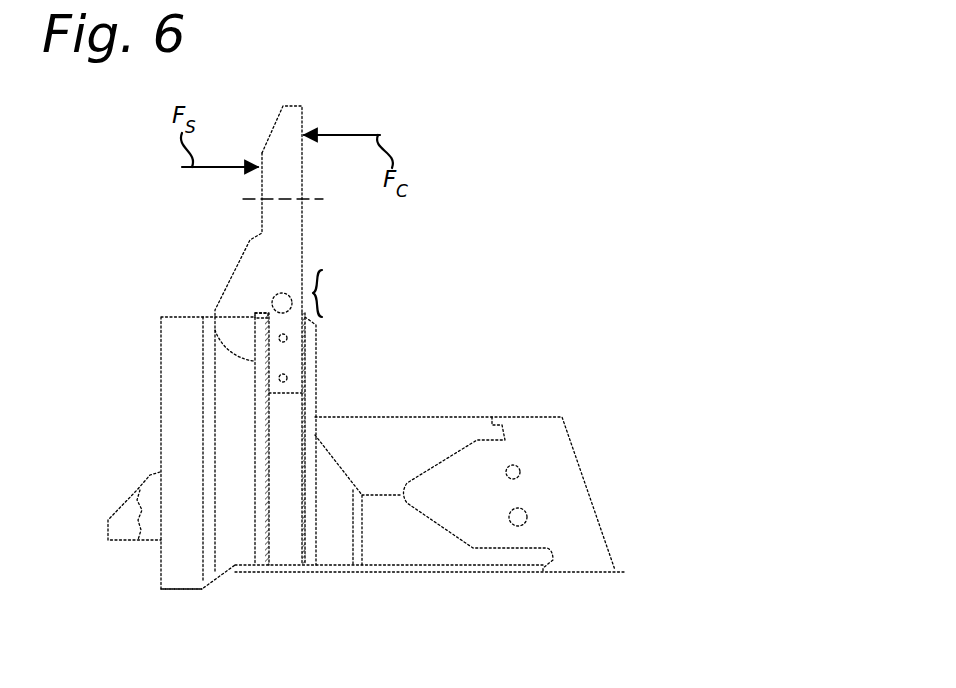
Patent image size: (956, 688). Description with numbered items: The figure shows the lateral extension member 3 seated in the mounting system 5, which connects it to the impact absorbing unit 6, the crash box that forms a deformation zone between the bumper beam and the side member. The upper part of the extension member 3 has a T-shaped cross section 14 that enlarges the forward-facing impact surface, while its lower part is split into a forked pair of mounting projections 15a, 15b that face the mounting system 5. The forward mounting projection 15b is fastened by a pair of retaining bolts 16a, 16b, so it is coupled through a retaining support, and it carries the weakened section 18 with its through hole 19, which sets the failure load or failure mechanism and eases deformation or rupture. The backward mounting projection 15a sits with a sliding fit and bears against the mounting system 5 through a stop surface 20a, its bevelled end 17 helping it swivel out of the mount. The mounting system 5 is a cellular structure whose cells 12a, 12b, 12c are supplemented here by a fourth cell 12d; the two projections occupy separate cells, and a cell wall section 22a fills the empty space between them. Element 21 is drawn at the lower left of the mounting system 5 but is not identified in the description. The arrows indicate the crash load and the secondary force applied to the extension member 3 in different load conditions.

The lateral extension member 3 is at (322, 110).
The mounting system 5 is at (150, 433).
The impact absorbing unit 6 is at (500, 412).
The cell 12a is at (180, 578).
The cell 12b is at (235, 557).
The cell 12c is at (282, 557).
The fourth cell 12d is at (332, 557).
The T-shaped cross section 14 is at (323, 199).
The backward mounting projection 15a is at (216, 275).
The forward mounting projection 15b is at (297, 359).
The retaining bolt 16a is at (288, 337).
The retaining bolt 16b is at (288, 378).
The bevelled end 17 is at (228, 343).
The weakened section 18 is at (316, 293).
The through hole 19 is at (280, 294).
The stop surface 20a is at (262, 312).
The guide element 21 is at (121, 555).
The cell wall section 22a is at (258, 325).